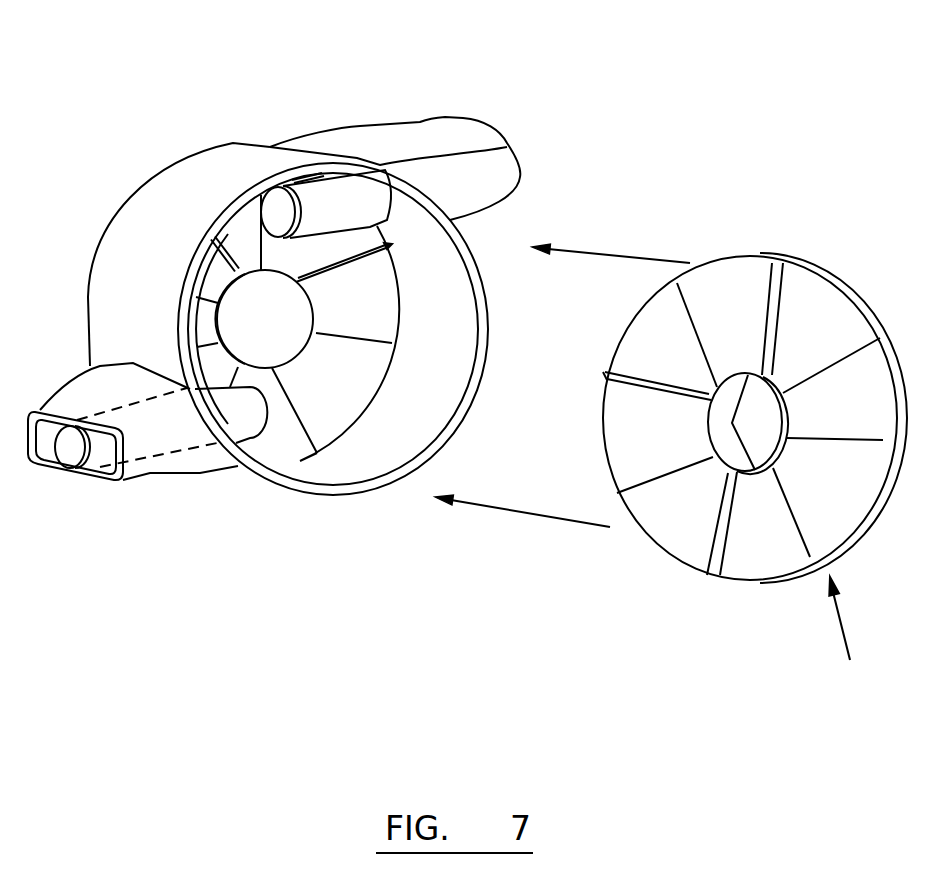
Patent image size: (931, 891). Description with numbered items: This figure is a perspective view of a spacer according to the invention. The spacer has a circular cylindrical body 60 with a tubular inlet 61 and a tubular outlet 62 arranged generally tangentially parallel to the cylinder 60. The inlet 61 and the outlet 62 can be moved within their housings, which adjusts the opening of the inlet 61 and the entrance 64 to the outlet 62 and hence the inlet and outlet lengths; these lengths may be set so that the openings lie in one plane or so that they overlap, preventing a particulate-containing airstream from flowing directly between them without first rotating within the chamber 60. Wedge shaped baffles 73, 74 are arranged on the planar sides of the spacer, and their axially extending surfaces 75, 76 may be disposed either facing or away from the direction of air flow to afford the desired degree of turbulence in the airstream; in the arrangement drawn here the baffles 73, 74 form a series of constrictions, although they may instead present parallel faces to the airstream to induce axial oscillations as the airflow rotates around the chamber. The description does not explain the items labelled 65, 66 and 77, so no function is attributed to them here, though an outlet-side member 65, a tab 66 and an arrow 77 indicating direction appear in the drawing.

The circular cylindrical body 60 is at (242, 163).
The tubular inlet 61 is at (237, 425).
The tubular outlet 62 is at (345, 195).
The entrance to the outlet 64 is at (278, 208).
The rectangular outlet duct 65 is at (72, 470).
The mounting tab 66 is at (517, 158).
The wedge shaped baffle 73 is at (377, 313).
The wedge shaped baffle 74 is at (630, 430).
The axially extending surface 75 is at (612, 375).
The axially extending surface 76 is at (388, 246).
The rotation direction arrow 77 is at (848, 637).